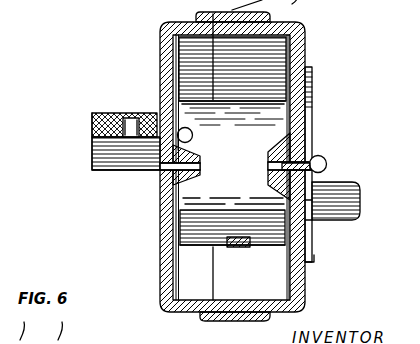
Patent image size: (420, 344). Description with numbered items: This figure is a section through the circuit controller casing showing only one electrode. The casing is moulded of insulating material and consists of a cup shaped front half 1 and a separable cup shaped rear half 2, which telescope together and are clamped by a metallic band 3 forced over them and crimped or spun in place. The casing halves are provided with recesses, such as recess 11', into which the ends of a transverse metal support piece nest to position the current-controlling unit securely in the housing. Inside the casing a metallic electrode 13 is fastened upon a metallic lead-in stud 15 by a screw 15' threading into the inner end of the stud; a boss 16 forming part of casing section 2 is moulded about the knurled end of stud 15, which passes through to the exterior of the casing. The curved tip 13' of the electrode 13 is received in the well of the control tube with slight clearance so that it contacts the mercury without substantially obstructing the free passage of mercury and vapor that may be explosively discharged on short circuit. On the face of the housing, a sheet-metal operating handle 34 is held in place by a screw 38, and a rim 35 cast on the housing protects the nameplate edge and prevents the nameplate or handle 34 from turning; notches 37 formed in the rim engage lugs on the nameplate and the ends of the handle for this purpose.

The front half of casing 1 is at (307, 38).
The rear half of casing 2 is at (163, 35).
The metallic band 3 is at (248, 321).
The metallic electrode 13 is at (263, 241).
The electrode tip 13' is at (253, 268).
The lead-in stud 15 is at (110, 141).
The screw 15' is at (196, 161).
The boss 16 is at (114, 165).
The recess in front casing half 11' is at (165, 188).
The rim 35 is at (314, 72).
The screw 38 is at (328, 164).
The operating handle 34 is at (362, 195).
The notches 37 is at (312, 205).